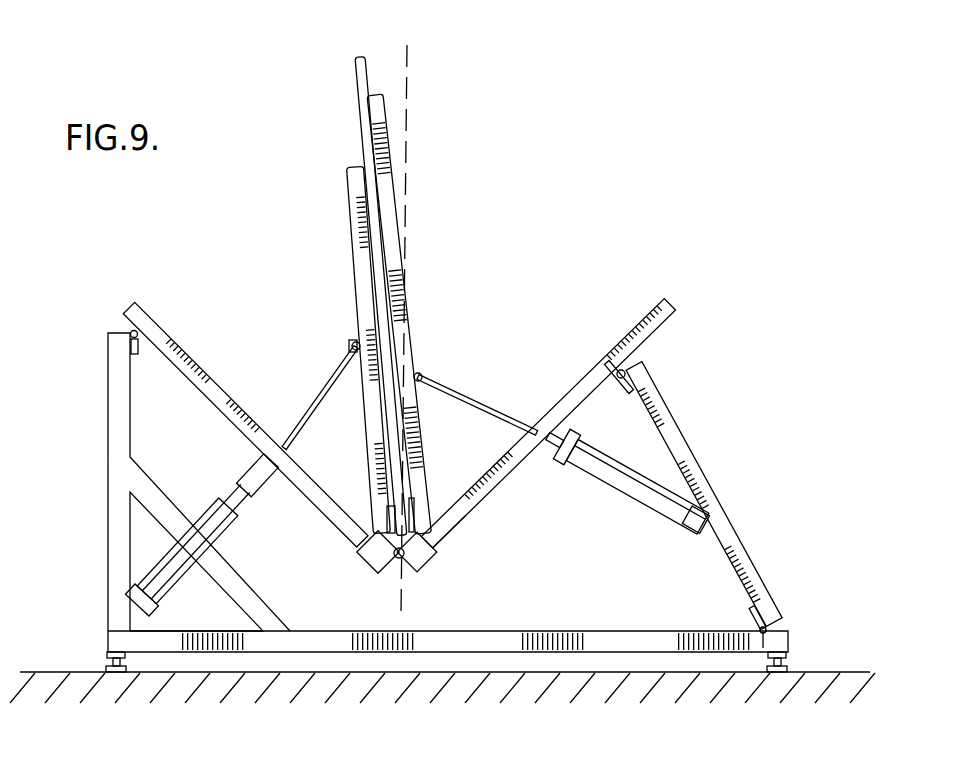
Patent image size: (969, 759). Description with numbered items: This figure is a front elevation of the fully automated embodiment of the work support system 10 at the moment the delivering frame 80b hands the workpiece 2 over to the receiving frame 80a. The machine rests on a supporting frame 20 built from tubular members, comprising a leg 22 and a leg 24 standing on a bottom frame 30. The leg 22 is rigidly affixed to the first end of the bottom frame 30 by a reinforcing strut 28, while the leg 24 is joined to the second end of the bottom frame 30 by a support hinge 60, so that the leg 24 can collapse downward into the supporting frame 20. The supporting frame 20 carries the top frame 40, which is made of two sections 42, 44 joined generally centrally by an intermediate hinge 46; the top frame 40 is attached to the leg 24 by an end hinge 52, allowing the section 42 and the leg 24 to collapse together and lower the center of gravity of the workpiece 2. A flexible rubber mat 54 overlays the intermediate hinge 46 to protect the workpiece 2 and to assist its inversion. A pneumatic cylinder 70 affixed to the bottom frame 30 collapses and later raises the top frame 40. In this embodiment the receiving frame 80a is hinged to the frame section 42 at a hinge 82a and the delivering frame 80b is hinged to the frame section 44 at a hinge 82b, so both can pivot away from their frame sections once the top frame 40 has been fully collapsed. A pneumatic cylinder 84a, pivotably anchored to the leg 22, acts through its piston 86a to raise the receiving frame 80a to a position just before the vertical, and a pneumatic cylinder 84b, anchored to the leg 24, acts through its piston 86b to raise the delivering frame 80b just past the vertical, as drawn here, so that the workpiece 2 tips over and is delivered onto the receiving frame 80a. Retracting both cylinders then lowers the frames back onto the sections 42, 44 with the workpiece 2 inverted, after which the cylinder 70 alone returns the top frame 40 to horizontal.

The workpiece 2 is at (366, 75).
The work support system 10 is at (405, 324).
The supporting frame 20 is at (420, 485).
The leg 22 is at (108, 418).
The leg 24 is at (670, 418).
The reinforcing strut 28 is at (230, 583).
The bottom frame 30 is at (592, 631).
The top frame 40 is at (548, 444).
The section 42 is at (188, 382).
The section 44 is at (445, 548).
The intermediate hinge 46 is at (398, 565).
The end hinge 52 is at (621, 380).
The rubber mat 54 is at (412, 518).
The support hinge 60 is at (762, 629).
The pneumatic cylinder 70 is at (252, 522).
The receiving frame 80a is at (357, 310).
The delivering frame 80b is at (405, 357).
The hinge 82a is at (363, 558).
The hinge 82b is at (425, 566).
The pneumatic cylinder 84a is at (208, 533).
The pneumatic cylinder 84b is at (636, 483).
The piston 86a is at (305, 402).
The piston 86b is at (493, 408).